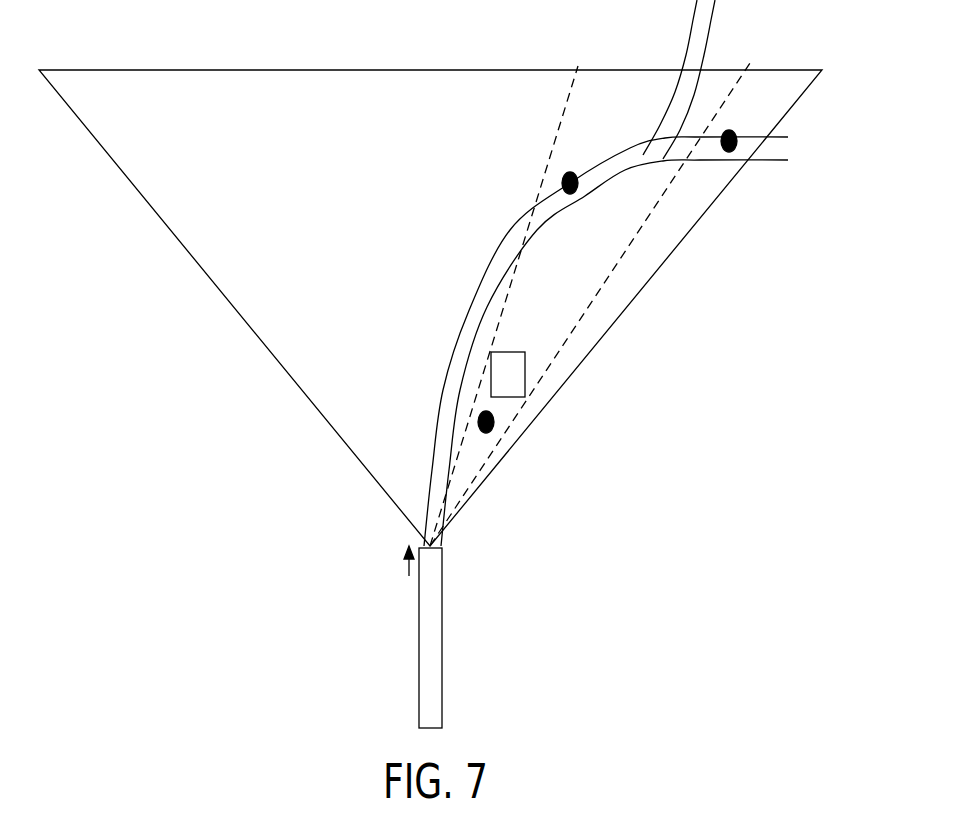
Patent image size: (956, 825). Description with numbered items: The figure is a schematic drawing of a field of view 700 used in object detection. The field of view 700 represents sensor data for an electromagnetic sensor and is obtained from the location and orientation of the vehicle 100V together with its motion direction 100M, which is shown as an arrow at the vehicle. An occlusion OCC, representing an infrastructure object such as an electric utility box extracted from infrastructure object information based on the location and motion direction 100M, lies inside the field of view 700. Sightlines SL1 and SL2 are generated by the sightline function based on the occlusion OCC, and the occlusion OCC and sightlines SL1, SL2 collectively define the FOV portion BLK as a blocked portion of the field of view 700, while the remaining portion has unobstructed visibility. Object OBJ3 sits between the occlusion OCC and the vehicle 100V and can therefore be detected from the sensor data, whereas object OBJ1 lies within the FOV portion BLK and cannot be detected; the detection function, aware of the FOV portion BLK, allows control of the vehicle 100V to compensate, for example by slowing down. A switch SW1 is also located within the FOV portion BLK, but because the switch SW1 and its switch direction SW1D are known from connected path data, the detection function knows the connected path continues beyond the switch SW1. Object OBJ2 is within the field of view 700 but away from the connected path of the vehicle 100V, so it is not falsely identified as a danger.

The field of view 700 is at (413, 230).
The sightline SL1 is at (572, 86).
The sightline SL2 is at (752, 60).
The switch SW1 is at (624, 163).
The switch direction SW1D is at (675, 118).
The object OBJ1 is at (574, 195).
The object OBJ2 is at (731, 152).
The object OBJ3 is at (488, 434).
The FOV portion BLK is at (582, 273).
The occlusion OCC is at (513, 380).
The vehicle 100V is at (435, 637).
The motion direction 100M is at (386, 563).